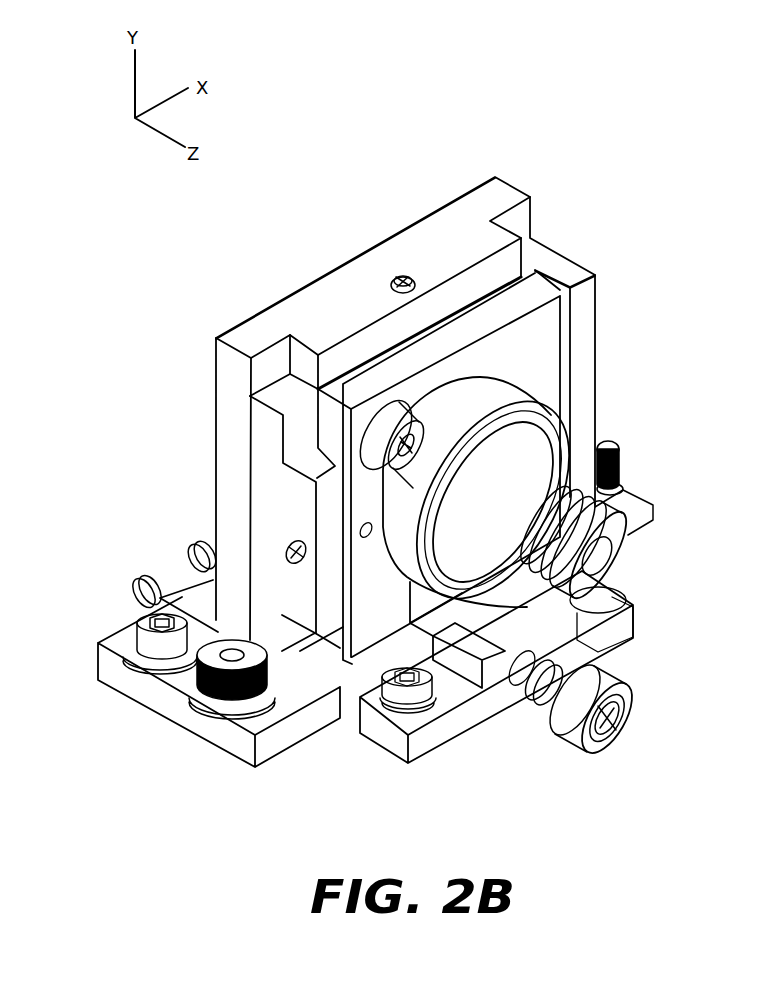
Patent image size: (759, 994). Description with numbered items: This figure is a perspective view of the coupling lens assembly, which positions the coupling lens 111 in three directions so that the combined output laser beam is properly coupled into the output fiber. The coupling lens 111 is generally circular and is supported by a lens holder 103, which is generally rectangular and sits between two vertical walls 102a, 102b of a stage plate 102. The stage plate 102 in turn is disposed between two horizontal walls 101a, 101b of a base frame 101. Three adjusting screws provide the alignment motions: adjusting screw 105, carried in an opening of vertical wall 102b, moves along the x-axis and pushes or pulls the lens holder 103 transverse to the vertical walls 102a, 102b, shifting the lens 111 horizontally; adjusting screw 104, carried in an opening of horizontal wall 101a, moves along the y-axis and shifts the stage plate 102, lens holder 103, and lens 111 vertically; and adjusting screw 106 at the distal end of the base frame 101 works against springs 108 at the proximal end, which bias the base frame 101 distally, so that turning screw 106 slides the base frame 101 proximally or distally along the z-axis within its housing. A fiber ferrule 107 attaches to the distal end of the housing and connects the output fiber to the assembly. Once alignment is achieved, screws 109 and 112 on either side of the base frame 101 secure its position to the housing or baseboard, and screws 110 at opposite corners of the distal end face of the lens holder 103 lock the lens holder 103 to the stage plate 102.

The base frame 101 is at (298, 292).
The horizontal wall 101a is at (452, 228).
The horizontal wall 101b is at (330, 618).
The stage plate 102 is at (597, 316).
The vertical wall 102a is at (595, 303).
The vertical wall 102b is at (392, 752).
The lens holder 103 is at (537, 372).
The adjusting screw 104 is at (395, 281).
The adjusting screw 105 is at (292, 542).
The adjusting screw 106 is at (630, 696).
The fiber ferrule 107 is at (613, 540).
The springs 108 is at (200, 558).
The screw 109 is at (153, 657).
The screws 110 is at (412, 422).
The coupling lens 111 is at (516, 460).
The screw 112 is at (270, 700).